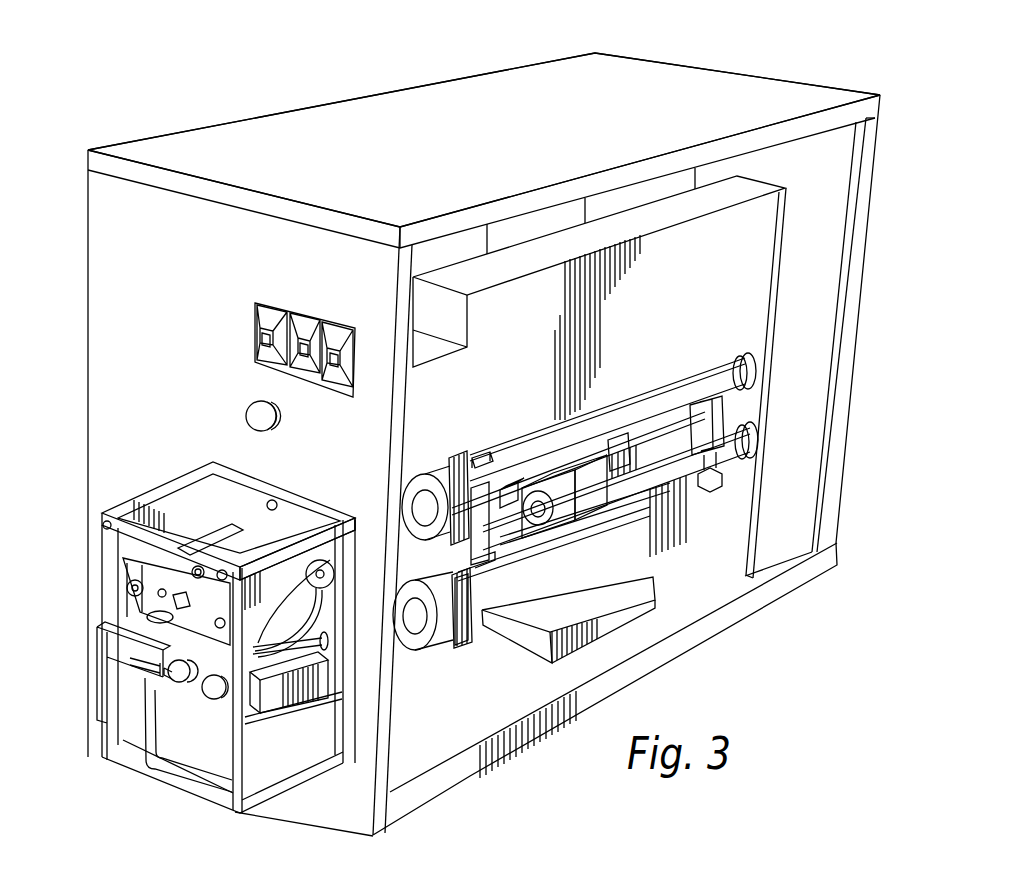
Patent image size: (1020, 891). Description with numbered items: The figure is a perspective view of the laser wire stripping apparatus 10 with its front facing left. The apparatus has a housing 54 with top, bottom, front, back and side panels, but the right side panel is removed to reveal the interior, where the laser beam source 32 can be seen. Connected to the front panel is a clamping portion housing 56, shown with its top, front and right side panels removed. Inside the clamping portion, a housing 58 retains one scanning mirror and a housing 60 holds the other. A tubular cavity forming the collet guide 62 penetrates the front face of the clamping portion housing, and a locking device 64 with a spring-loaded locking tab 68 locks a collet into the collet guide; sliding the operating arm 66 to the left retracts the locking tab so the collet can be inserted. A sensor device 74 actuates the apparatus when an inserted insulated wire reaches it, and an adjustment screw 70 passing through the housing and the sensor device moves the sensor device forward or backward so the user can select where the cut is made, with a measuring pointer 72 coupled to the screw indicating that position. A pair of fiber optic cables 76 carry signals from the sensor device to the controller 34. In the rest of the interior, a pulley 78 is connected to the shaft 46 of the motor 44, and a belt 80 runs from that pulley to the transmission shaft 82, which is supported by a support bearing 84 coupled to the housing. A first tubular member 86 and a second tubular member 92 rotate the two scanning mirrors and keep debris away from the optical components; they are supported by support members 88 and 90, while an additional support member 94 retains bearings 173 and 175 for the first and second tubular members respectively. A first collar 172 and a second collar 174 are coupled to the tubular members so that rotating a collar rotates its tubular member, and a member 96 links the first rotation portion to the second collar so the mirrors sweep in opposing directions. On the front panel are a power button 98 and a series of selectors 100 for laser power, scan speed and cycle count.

The laser wire stripping apparatus 10 is at (318, 66).
The laser beam source 32 is at (720, 296).
The controller 34 is at (627, 626).
The motor 44 is at (597, 503).
The motor shaft 46 is at (560, 520).
The apparatus housing 54 is at (717, 72).
The clamping portion housing 56 is at (230, 807).
The mirror housing 58 is at (200, 533).
The mirror housing 60 is at (212, 700).
The collet guide 62 is at (147, 733).
The locking device 64 is at (107, 647).
The operating arm 66 is at (130, 668).
The locking tab 68 is at (173, 675).
The adjustment screw 70 is at (170, 676).
The measuring pointer 72 is at (297, 712).
The sensor device 74 is at (337, 537).
The fiber optic cables 76 is at (347, 590).
The pulley 78 is at (540, 513).
The belt 80 is at (522, 490).
The transmission shaft 82 is at (690, 415).
The support bearing 84 is at (655, 393).
The first tubular member 86 is at (685, 476).
The support member 88 is at (728, 413).
The support member 90 is at (494, 458).
The second tubular member 92 is at (683, 390).
The support member 94 is at (457, 462).
The member 96 is at (498, 575).
The power button 98 is at (248, 410).
The selectors 100 is at (335, 352).
The first collar 172 is at (481, 612).
The bearing 173 is at (433, 662).
The second collar 174 is at (478, 486).
The bearing 175 is at (428, 480).